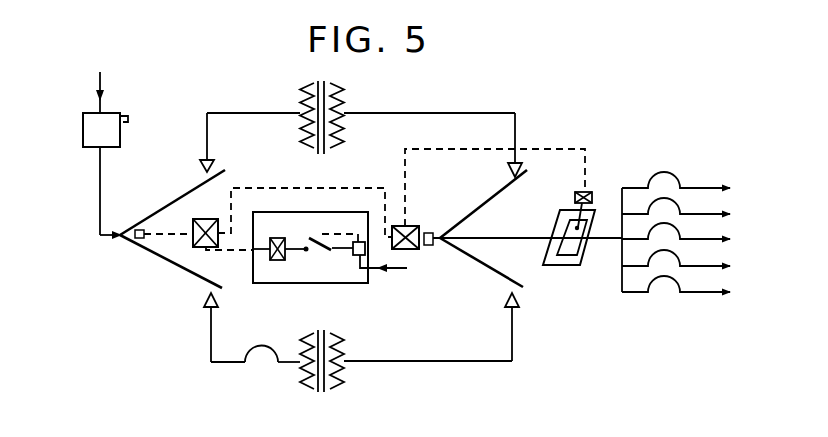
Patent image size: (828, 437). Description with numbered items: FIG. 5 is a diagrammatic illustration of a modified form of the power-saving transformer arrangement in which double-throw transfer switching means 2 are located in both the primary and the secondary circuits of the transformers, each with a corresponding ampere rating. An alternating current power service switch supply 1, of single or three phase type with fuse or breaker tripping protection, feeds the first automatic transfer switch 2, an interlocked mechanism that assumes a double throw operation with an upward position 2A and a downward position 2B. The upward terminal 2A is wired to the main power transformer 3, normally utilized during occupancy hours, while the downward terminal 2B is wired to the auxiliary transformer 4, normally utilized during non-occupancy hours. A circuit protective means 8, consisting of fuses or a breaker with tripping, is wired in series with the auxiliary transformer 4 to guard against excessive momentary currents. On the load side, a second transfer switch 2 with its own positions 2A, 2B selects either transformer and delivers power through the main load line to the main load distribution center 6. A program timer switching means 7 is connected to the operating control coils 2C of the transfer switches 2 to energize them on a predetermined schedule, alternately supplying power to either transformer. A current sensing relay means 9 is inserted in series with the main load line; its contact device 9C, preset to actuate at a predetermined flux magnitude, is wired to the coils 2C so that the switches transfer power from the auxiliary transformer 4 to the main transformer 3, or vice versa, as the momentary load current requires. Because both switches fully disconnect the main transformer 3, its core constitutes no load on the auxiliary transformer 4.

The alternating current power service switch supply 1 is at (122, 142).
The automatic transfer switch 2 is at (142, 247).
The upward position terminal 2A is at (191, 189).
The downward position terminal 2B is at (205, 306).
The operating control coil 2C is at (209, 218).
The main power transformer 3 is at (340, 96).
The auxiliary transformer 4 is at (332, 386).
The main load distribution center 6 is at (635, 188).
The program timer switching means 7 is at (308, 283).
The circuit protective means 8 is at (273, 357).
The current sensing relay means 9 is at (560, 264).
The contact device 9C is at (575, 197).